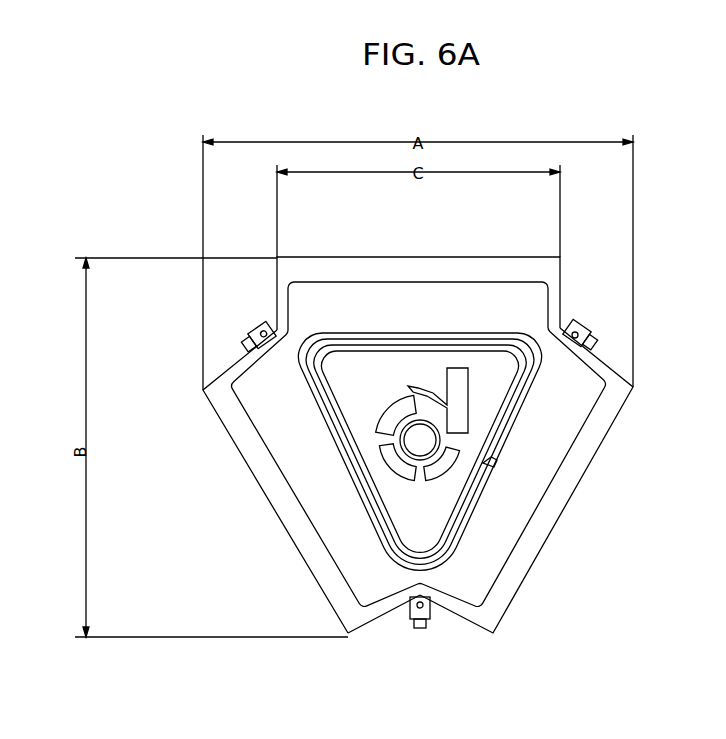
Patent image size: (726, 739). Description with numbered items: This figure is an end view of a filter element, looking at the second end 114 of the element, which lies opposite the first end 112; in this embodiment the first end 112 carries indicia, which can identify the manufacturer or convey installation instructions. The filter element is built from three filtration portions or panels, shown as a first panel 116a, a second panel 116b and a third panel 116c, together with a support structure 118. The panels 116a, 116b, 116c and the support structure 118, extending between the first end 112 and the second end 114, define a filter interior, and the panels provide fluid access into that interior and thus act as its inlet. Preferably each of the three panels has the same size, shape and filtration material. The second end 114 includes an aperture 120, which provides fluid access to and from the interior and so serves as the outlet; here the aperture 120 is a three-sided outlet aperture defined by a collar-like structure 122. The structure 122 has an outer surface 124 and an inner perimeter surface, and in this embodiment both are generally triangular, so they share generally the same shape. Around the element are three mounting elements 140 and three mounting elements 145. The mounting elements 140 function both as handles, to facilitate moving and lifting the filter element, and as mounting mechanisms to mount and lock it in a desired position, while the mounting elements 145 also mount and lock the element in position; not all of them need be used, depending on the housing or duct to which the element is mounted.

The first end 112 is at (408, 508).
The second end 114 is at (472, 583).
The first panel 116a is at (580, 487).
The second panel 116b is at (462, 255).
The third panel 116c is at (260, 488).
The support structure 118 is at (368, 625).
The aperture 120 is at (480, 507).
The structure 122 is at (494, 472).
The outer surface 124 is at (540, 405).
The mounting element 140 is at (592, 320).
The mounting element 145 is at (583, 343).